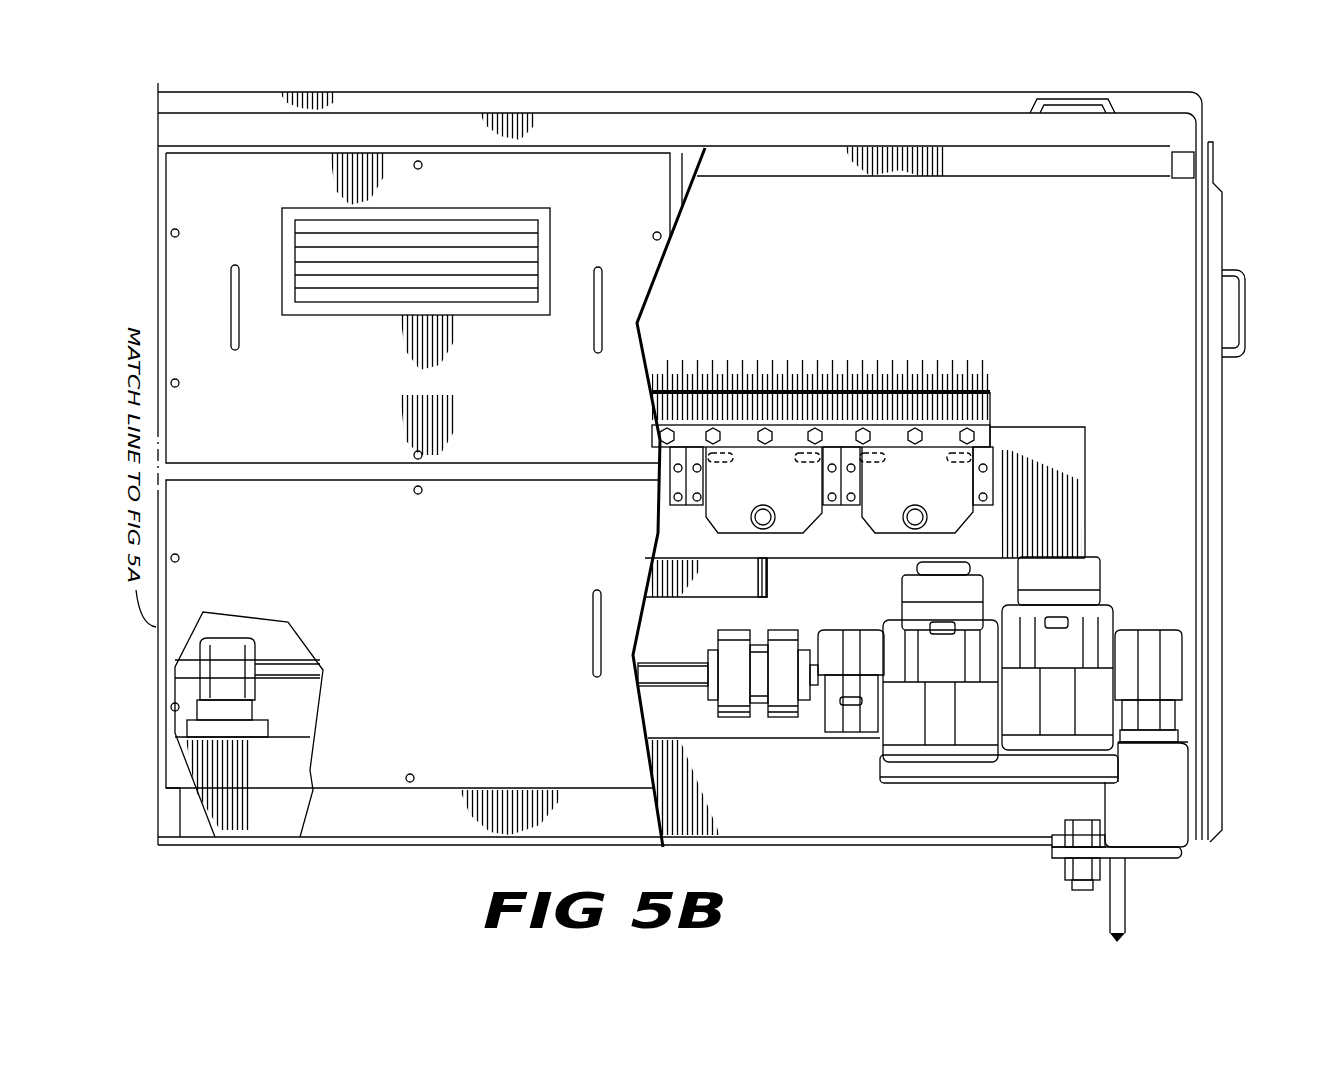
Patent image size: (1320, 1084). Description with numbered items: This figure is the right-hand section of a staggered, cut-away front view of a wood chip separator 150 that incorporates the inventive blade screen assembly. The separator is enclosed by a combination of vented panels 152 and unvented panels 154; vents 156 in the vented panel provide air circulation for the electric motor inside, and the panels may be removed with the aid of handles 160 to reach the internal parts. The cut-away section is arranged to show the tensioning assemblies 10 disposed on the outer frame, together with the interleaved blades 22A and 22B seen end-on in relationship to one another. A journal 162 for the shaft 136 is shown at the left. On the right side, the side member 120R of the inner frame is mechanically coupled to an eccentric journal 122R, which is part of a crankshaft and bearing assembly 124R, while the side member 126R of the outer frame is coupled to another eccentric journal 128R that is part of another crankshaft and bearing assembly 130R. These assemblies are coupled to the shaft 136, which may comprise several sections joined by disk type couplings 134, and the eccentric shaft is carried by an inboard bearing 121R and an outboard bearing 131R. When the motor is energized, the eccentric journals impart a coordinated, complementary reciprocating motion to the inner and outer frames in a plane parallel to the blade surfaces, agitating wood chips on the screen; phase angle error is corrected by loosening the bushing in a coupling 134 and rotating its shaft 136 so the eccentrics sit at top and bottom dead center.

The wood chip separator 150 is at (1218, 116).
The vented panel 152 is at (360, 390).
The unvented panel 154 is at (482, 680).
The vents 156 is at (447, 226).
The handles 160 is at (603, 278).
The journal 162 is at (222, 650).
The interleaved blades 22A is at (963, 380).
The interleaved blades 22B is at (850, 378).
The side member of the outer frame 126R is at (1032, 432).
The tensioning assembly 10 is at (722, 517).
The shaft 136 is at (655, 674).
The disk type coupling 134 is at (775, 718).
The inboard bearing 121R is at (848, 704).
The crankshaft and bearing assembly 124R is at (918, 746).
The eccentric journal 122R is at (917, 588).
The side member of the inner frame 120R is at (916, 565).
The crankshaft and bearing assembly 130R is at (1080, 746).
The eccentric journal 128R is at (1087, 570).
The outboard bearing 131R is at (1170, 640).